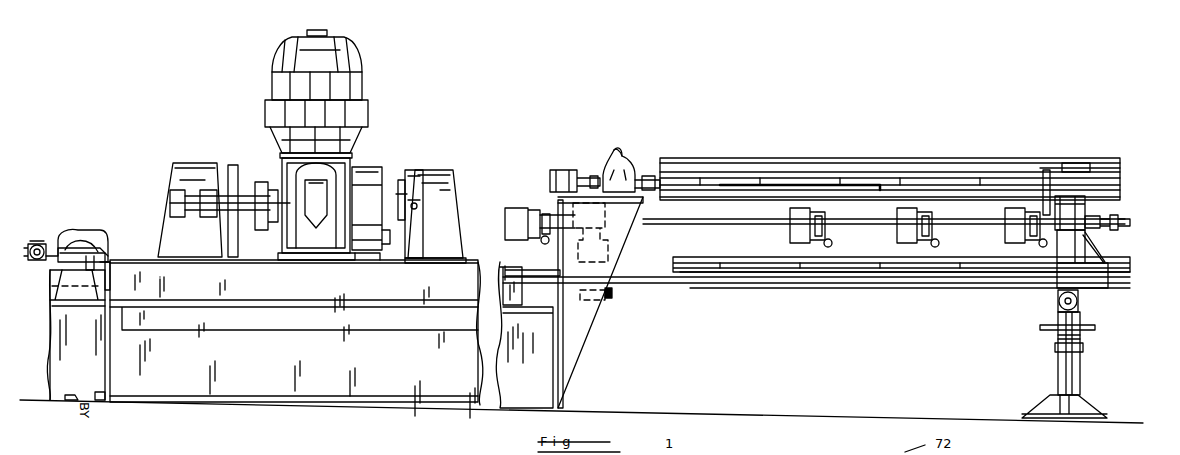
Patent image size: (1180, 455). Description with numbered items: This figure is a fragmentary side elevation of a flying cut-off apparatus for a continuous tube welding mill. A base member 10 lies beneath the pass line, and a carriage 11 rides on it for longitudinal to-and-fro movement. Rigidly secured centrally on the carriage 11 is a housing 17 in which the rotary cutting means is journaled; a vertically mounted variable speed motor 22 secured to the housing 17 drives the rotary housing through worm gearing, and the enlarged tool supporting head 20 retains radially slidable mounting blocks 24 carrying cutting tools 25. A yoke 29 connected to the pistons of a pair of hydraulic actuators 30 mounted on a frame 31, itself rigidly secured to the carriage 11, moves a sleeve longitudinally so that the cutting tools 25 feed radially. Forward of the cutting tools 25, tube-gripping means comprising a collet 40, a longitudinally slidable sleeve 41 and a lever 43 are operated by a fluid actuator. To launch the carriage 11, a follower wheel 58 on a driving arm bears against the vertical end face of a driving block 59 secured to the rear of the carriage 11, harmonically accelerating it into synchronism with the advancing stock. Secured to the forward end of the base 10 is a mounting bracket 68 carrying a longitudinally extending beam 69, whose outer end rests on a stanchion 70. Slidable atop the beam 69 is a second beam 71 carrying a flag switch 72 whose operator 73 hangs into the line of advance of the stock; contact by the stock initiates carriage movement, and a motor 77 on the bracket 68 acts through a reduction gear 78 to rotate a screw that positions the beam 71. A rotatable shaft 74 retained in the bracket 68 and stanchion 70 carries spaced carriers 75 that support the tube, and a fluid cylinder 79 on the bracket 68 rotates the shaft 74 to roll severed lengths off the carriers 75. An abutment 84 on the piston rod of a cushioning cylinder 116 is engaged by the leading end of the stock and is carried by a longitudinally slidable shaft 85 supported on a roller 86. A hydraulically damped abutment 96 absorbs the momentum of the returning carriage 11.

The base member 10 is at (212, 394).
The carriage 11 is at (130, 270).
The housing 17 is at (342, 170).
The tool supporting head 20 is at (380, 168).
The variable speed motor 22 is at (352, 47).
The mounting block 24 is at (366, 262).
The cutting tool 25 is at (390, 236).
The yoke 29 is at (258, 182).
The hydraulic actuator 30 is at (174, 196).
The frame 31 is at (184, 162).
The collet 40 is at (456, 175).
The longitudinally slidable sleeve 41 is at (400, 196).
The lever 43 is at (412, 170).
The follower wheel 58 is at (37, 244).
The driving block 59 is at (65, 246).
The mounting bracket 68 is at (585, 328).
The beam 69 is at (1080, 207).
The stanchion 70 is at (1080, 370).
The second beam 71 is at (1122, 175).
The flag switch 72 is at (1087, 162).
The operator 73 is at (1043, 208).
The rotatable shaft 74 is at (658, 222).
The carrier 75 is at (508, 228).
The motor 77 is at (562, 170).
The reduction gear 78 is at (622, 156).
The fluid cylinder 79 is at (614, 294).
The abutment 84 is at (1085, 232).
The longitudinally slidable shaft 85 is at (905, 288).
The roller 86 is at (1078, 303).
The hydraulically damped abutment 96 is at (92, 244).
The cylinder 116 is at (1112, 222).